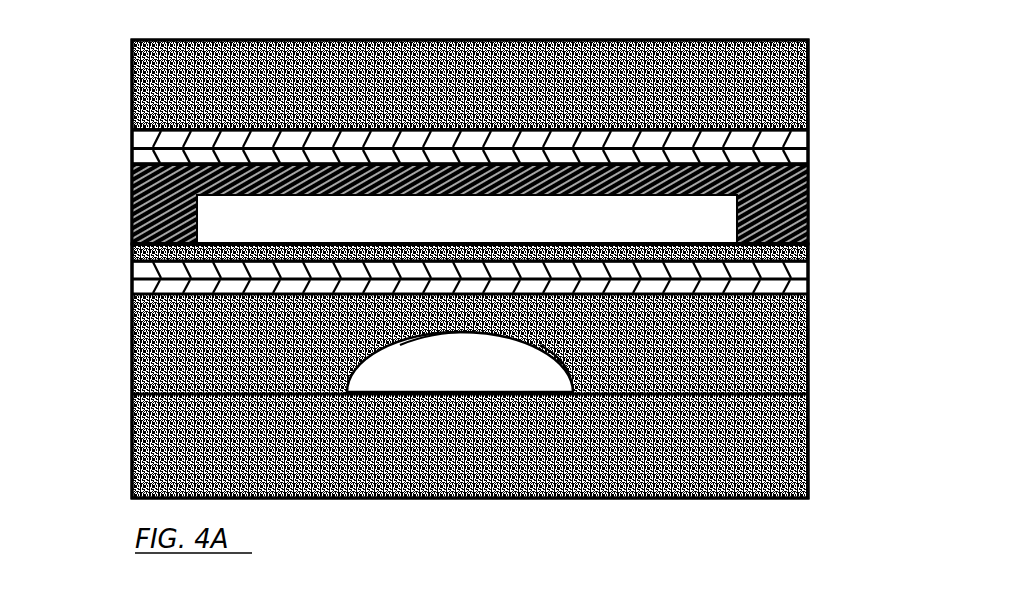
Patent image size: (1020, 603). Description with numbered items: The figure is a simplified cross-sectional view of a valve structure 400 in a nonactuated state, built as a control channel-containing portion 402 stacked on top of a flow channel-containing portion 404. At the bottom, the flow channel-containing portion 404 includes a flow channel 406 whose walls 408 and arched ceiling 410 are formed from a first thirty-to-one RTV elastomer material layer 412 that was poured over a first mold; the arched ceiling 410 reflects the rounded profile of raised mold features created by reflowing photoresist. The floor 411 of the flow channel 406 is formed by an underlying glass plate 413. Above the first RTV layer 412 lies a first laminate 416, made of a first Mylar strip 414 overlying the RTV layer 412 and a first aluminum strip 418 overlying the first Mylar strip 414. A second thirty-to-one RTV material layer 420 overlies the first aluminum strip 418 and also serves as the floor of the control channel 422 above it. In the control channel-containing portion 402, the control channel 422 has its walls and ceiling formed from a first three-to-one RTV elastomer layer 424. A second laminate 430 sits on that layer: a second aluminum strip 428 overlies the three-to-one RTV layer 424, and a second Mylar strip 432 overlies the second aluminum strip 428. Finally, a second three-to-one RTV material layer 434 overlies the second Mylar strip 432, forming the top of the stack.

The valve structure 400 is at (528, 31).
The control channel-containing portion 402 is at (818, 43).
The flow channel-containing portion 404 is at (818, 243).
The flow channel 406 is at (488, 372).
The walls 408 is at (560, 370).
The arched ceiling 410 is at (436, 335).
The floor 411 is at (389, 389).
The first 30:1 RTV 615 material layer 412 is at (132, 340).
The glass plate 413 is at (132, 428).
The first Mylar strip 414 is at (132, 287).
The first laminate 416 is at (812, 262).
The first aluminum strip 418 is at (132, 270).
The second 30:1 RTV 615 material layer 420 is at (132, 253).
The control channel 422 is at (462, 225).
The first 3:1 RTV 615 elastomer layer 424 is at (125, 165).
The second aluminum strip 428 is at (132, 151).
The second laminate 430 is at (812, 131).
The second Mylar strip 432 is at (132, 133).
The second 3:1 RTV 615 material layer 434 is at (132, 90).